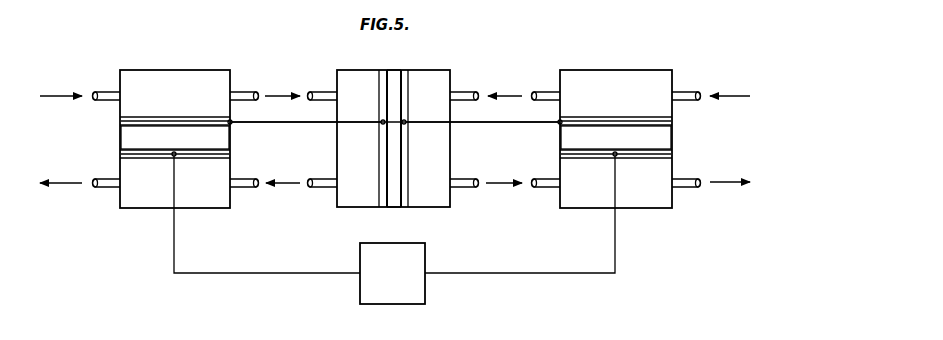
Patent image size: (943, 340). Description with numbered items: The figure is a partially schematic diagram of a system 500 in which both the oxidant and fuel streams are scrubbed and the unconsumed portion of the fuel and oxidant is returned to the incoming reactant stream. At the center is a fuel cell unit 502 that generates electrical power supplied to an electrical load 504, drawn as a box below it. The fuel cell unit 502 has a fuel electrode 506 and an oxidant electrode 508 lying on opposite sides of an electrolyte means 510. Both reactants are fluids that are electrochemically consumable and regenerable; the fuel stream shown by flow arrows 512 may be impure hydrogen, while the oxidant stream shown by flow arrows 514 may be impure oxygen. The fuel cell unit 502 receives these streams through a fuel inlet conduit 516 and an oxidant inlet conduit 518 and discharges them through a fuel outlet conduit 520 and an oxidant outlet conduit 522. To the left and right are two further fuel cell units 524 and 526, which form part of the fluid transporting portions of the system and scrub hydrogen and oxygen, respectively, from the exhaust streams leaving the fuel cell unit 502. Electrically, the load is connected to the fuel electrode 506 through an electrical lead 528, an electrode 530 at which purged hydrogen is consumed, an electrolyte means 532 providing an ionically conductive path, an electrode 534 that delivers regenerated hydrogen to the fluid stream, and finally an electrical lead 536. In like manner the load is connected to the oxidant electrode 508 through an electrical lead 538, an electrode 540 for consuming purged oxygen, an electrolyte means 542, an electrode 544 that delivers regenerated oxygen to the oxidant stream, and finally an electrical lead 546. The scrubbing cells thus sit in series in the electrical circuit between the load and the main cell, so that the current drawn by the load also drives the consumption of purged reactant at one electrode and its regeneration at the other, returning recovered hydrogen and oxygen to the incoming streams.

The system 500 is at (530, 44).
The fuel cell unit 502 is at (415, 54).
The electrical load 504 is at (425, 292).
The fuel electrode 506 is at (380, 166).
The oxidant electrode 508 is at (408, 133).
The electrolyte means 510 is at (394, 208).
The flow arrows (fuel stream) 512 is at (54, 94).
The flow arrows (oxidant stream) 514 is at (506, 94).
The fuel inlet conduit 516 is at (320, 90).
The oxidant inlet conduit 518 is at (462, 90).
The fuel outlet conduit 520 is at (320, 188).
The oxidant outlet conduit 522 is at (464, 188).
The fuel cell unit 524 is at (168, 66).
The fuel cell unit 526 is at (640, 44).
The electrical lead 528 is at (276, 275).
The electrode 530 is at (147, 156).
The electrolyte means 532 is at (132, 141).
The electrode 534 is at (177, 124).
The electrical lead 536 is at (280, 124).
The electrical lead 538 is at (618, 248).
The electrode 540 is at (590, 156).
The electrolyte means 542 is at (665, 137).
The electrode 544 is at (614, 124).
The electrical lead 546 is at (502, 124).